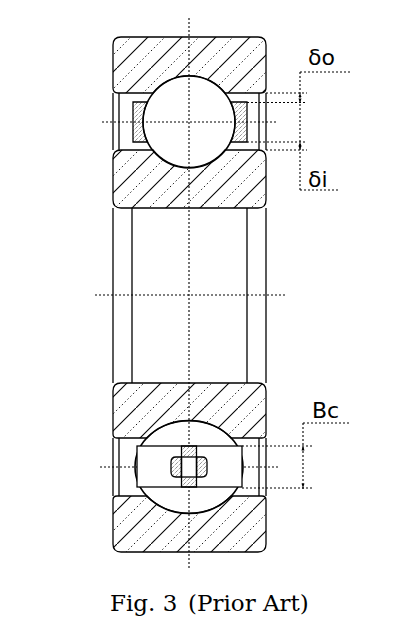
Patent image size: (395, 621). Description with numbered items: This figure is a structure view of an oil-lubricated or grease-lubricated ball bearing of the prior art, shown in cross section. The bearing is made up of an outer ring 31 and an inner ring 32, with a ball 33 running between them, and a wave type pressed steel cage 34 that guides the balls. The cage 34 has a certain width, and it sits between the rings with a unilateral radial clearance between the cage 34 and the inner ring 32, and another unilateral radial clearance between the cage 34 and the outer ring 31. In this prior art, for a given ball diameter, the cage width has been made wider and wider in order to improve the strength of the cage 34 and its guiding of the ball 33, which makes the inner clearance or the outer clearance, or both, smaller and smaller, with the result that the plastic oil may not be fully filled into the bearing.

The outer ring 31 is at (142, 72).
The inner ring 32 is at (130, 183).
The ball 33 is at (173, 435).
The wave type pressed steel cage 34 is at (149, 469).